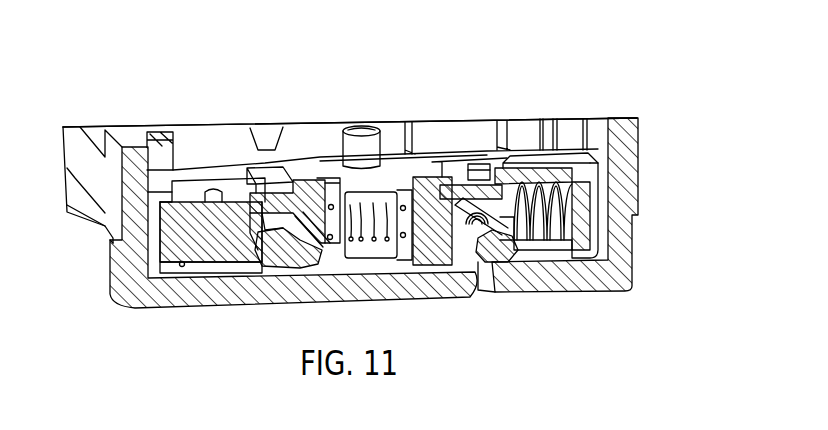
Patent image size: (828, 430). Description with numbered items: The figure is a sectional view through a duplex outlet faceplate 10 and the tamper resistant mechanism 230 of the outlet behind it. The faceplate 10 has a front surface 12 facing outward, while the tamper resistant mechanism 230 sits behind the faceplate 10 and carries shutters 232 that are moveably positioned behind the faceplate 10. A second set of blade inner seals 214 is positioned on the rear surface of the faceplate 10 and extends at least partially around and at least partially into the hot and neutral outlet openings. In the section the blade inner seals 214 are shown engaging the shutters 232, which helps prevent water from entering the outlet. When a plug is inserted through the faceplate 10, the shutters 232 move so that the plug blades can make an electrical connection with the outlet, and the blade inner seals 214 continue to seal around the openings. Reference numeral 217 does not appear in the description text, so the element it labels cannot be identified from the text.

The duplex outlet faceplate 10 is at (650, 113).
The front surface 12 is at (573, 287).
The second set of blade inner seals 214 is at (453, 260).
The terminal block 217 is at (258, 275).
The tamper resistant mechanism 230 is at (604, 199).
The shutters 232 is at (480, 258).